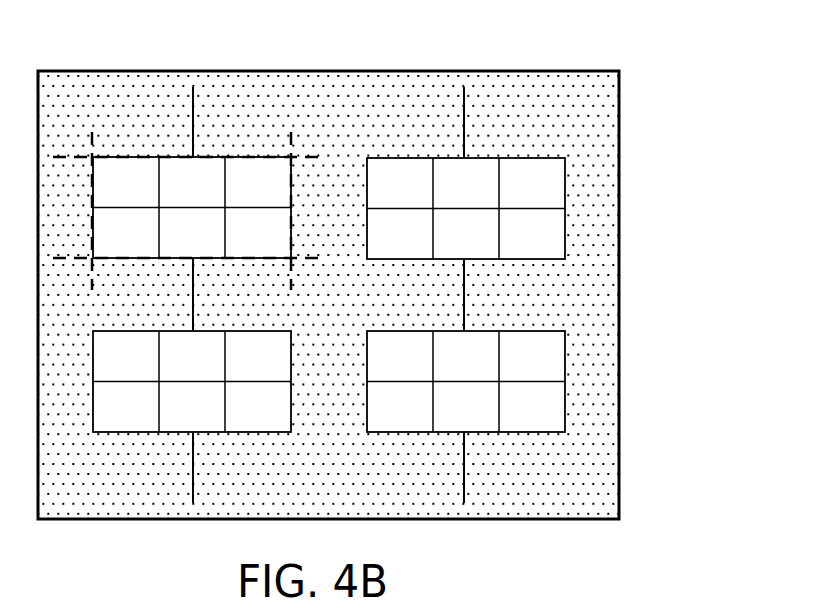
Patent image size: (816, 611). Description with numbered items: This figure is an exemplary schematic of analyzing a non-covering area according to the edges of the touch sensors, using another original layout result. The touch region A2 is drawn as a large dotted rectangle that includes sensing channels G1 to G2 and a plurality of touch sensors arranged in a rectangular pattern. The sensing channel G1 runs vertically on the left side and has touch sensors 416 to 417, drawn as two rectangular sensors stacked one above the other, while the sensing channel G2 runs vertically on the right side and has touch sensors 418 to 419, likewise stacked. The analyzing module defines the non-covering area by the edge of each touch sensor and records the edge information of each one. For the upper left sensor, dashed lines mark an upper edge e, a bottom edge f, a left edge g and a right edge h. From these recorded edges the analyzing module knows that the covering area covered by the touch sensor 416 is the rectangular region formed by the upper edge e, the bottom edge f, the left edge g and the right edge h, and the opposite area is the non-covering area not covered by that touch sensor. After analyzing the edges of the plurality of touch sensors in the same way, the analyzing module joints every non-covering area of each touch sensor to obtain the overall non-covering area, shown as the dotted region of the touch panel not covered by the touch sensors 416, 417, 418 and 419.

The touch sensor 416 is at (247, 157).
The touch sensor 417 is at (268, 331).
The touch sensor 418 is at (520, 158).
The touch sensor 419 is at (520, 331).
The sensing channel G1 is at (193, 118).
The sensing channel G2 is at (464, 118).
The touch region A2 is at (620, 124).
The upper edge e is at (122, 156).
The bottom edge f is at (142, 263).
The left edge g is at (92, 199).
The right edge h is at (292, 218).